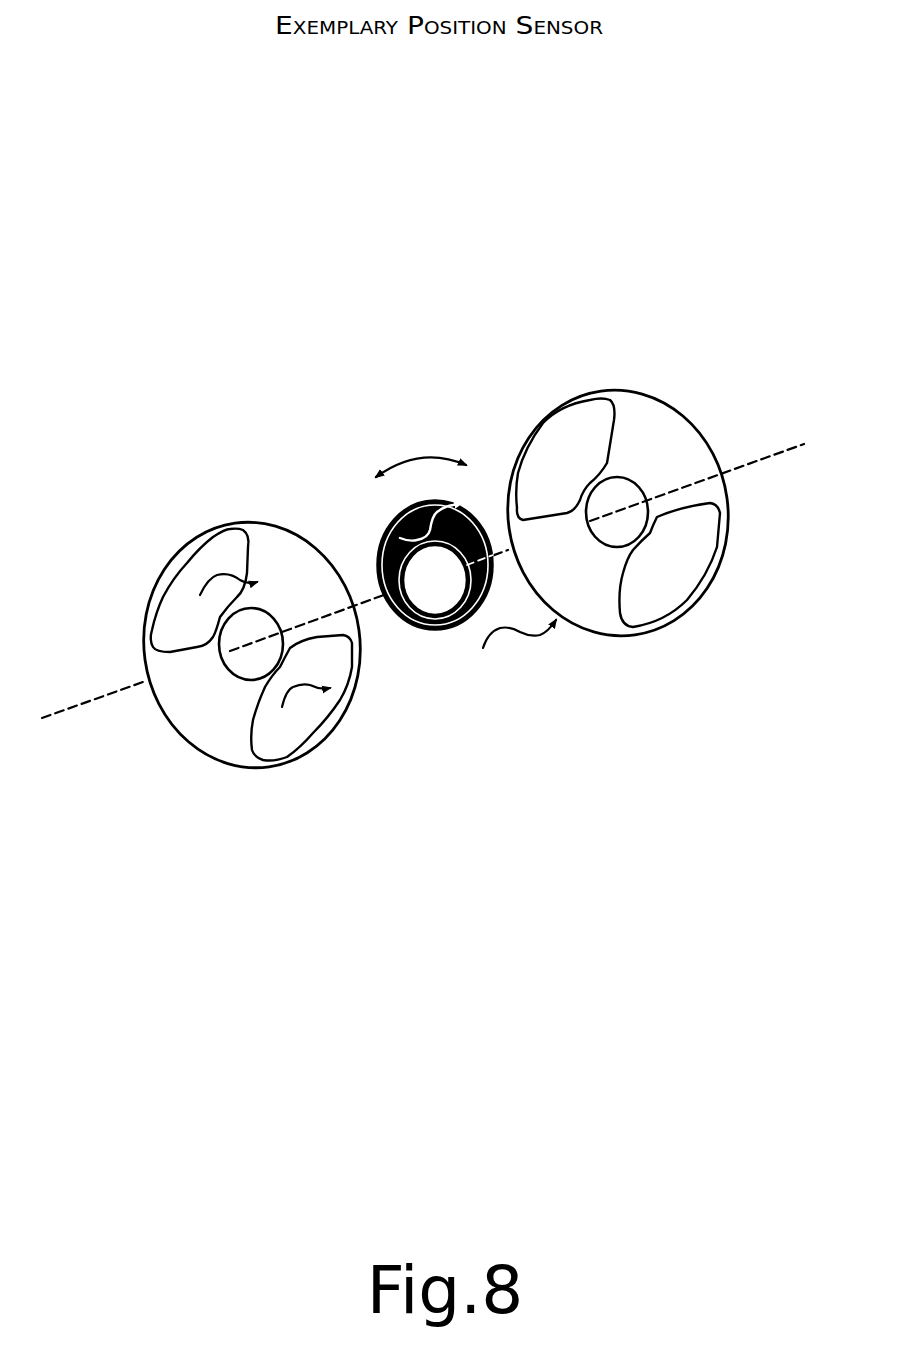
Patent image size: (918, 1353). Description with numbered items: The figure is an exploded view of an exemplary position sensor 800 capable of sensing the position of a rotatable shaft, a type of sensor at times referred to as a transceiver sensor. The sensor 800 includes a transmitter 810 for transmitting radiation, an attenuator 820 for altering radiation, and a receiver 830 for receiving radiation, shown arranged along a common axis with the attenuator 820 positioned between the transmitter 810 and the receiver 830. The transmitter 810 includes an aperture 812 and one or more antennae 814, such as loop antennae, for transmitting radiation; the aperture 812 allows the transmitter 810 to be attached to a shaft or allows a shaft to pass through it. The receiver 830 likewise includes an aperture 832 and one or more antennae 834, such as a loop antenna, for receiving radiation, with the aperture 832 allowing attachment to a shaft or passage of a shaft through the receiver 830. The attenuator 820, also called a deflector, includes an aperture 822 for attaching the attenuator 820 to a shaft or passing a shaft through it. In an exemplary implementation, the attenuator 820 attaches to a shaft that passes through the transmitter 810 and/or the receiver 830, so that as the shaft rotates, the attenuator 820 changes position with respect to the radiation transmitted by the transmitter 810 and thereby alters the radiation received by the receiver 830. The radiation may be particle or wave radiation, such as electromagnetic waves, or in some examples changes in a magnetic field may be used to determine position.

The sensor 800 is at (648, 98).
The transmitter 810 is at (252, 633).
The aperture 812 is at (243, 681).
The antennae 814 is at (251, 645).
The attenuator 820 is at (398, 558).
The aperture 822 is at (447, 612).
The receiver 830 is at (613, 501).
The aperture 832 is at (603, 549).
The antennae 834 is at (618, 513).